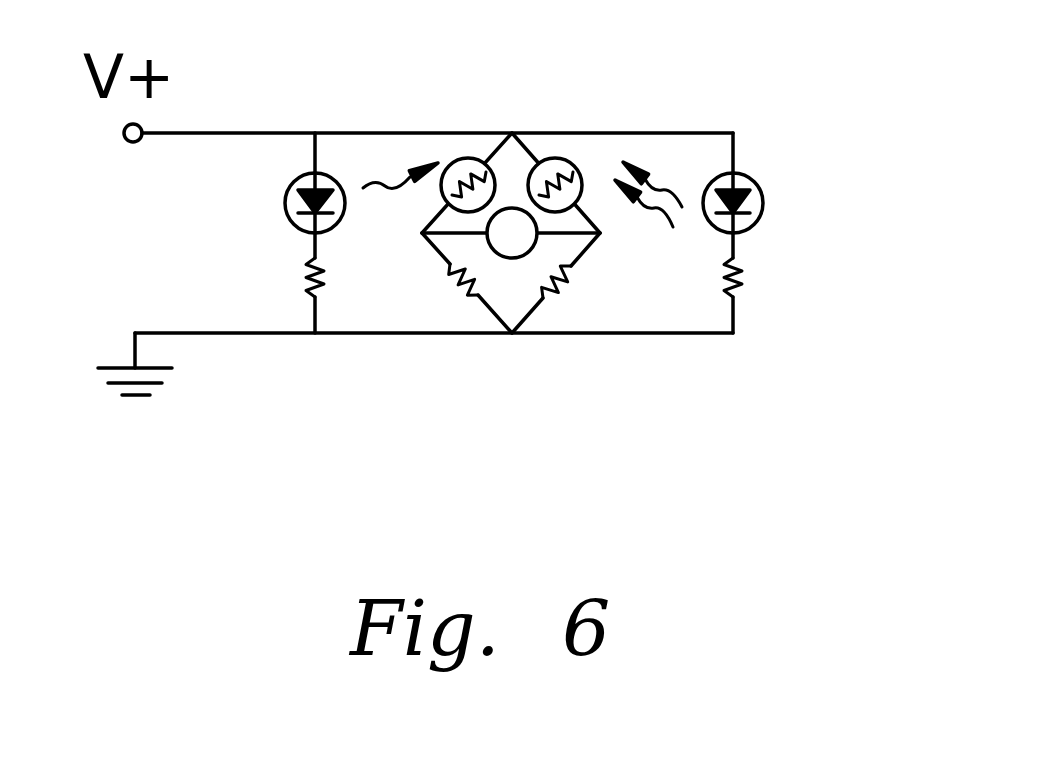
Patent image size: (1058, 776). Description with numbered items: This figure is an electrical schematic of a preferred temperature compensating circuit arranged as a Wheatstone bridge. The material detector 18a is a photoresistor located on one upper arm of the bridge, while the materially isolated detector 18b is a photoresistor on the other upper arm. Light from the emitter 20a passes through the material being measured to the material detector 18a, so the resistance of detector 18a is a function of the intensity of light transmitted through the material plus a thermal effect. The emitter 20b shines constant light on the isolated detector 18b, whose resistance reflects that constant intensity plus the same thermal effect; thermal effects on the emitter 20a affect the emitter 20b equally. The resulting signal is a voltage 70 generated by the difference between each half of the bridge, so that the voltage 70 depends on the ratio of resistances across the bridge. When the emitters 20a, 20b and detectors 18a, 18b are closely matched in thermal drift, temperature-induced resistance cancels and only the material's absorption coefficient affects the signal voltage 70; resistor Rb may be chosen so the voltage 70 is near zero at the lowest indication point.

The material detector 18a is at (465, 160).
The materially isolated detector 18b is at (573, 163).
The emitter 20a is at (287, 210).
The emitter 20b is at (763, 193).
The signal voltage 70 is at (593, 221).